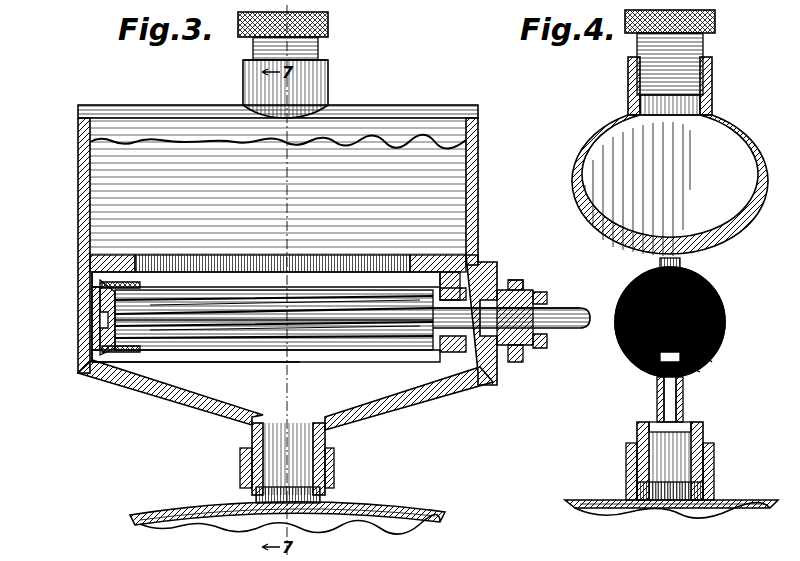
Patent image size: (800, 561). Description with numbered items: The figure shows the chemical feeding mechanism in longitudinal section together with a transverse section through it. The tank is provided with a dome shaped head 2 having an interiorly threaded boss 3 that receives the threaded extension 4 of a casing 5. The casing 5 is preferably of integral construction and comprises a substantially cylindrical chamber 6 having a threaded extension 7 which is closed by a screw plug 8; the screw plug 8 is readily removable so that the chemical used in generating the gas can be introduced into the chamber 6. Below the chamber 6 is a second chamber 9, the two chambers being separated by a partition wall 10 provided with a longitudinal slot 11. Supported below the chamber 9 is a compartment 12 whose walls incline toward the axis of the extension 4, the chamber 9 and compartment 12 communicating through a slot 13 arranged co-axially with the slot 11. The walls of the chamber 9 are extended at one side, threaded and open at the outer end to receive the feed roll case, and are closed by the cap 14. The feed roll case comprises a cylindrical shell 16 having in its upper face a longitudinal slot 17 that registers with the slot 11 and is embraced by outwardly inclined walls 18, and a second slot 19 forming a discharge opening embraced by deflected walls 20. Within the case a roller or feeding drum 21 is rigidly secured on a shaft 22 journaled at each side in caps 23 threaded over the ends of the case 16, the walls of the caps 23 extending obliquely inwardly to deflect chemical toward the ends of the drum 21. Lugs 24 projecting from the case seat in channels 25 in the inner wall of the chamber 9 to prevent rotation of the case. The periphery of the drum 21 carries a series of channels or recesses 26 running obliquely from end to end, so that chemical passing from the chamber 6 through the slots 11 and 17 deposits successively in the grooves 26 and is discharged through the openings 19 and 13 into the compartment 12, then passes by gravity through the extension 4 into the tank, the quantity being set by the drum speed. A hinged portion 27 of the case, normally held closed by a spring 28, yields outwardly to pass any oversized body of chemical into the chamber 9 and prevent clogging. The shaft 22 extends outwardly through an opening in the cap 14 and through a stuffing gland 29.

In FIG. 3, the dome shaped head 2 is at (390, 500).
In FIG. 4, the dome shaped head 2 is at (598, 500).
In FIG. 3, the interiorly threaded boss 3 is at (334, 468).
In FIG. 4, the interiorly threaded boss 3 is at (714, 465).
In FIG. 3, the threaded extension 4 is at (325, 440).
In FIG. 4, the threaded extension 4 is at (703, 435).
In FIG. 3, the casing 5 is at (430, 105).
In FIG. 4, the casing 5 is at (750, 160).
In FIG. 3, the cylindrical chamber 6 is at (278, 186).
In FIG. 4, the cylindrical chamber 6 is at (722, 143).
In FIG. 3, the threaded extension 7 is at (318, 92).
In FIG. 4, the threaded extension 7 is at (712, 95).
In FIG. 3, the screw plug 8 is at (328, 22).
In FIG. 4, the screw plug 8 is at (715, 22).
In FIG. 4, the second chamber 9 is at (715, 325).
In FIG. 3, the partition wall 10 is at (455, 262).
In FIG. 4, the partition wall 10 is at (672, 280).
In FIG. 3, the longitudinal slot 11 is at (362, 282).
In FIG. 4, the longitudinal slot 11 is at (672, 258).
In FIG. 3, the compartment 12 is at (368, 395).
In FIG. 4, the compartment 12 is at (660, 405).
In FIG. 3, the slot 13 is at (400, 355).
In FIG. 4, the slot 13 is at (690, 375).
In FIG. 3, the cap 14 is at (515, 362).
In FIG. 3, the cylindrical shell 16 is at (125, 352).
In FIG. 4, the cylindrical shell 16 is at (656, 348).
In FIG. 3, the longitudinal slot 17 is at (395, 278).
In FIG. 4, the longitudinal slot 17 is at (700, 282).
In FIG. 3, the outwardly inclined walls 18 is at (325, 282).
In FIG. 4, the outwardly inclined walls 18 is at (650, 285).
In FIG. 3, the second slot 19 is at (185, 360).
In FIG. 4, the second slot 19 is at (714, 365).
In FIG. 3, the walls 20 is at (330, 330).
In FIG. 4, the walls 20 is at (668, 360).
In FIG. 3, the roller or feeding drum 21 is at (268, 340).
In FIG. 4, the roller or feeding drum 21 is at (650, 335).
In FIG. 3, the shaft 22 is at (100, 328).
In FIG. 4, the shaft 22 is at (666, 356).
In FIG. 3, the caps 23 is at (100, 318).
In FIG. 3, the lugs 24 is at (110, 352).
In FIG. 4, the lugs 24 is at (745, 366).
In FIG. 3, the channels 25 is at (470, 352).
In FIG. 4, the channels 25 is at (750, 345).
In FIG. 3, the channels or recesses 26 is at (290, 320).
In FIG. 4, the channels or recesses 26 is at (700, 309).
In FIG. 4, the hinged portion 27 is at (708, 300).
In FIG. 4, the spring 28 is at (725, 335).
In FIG. 3, the stuffing gland 29 is at (520, 290).